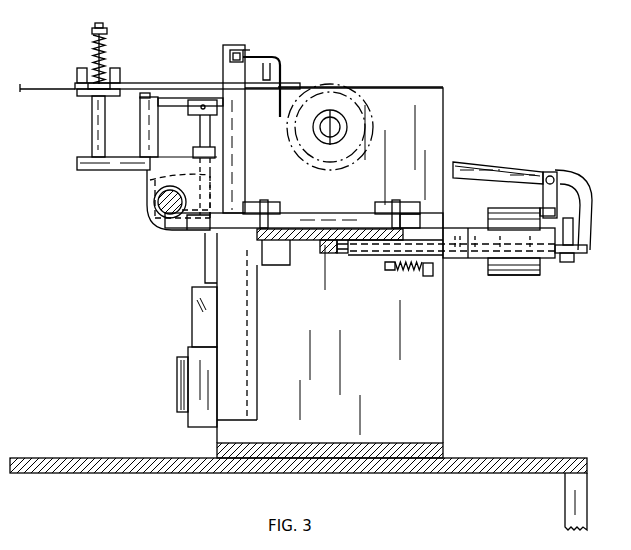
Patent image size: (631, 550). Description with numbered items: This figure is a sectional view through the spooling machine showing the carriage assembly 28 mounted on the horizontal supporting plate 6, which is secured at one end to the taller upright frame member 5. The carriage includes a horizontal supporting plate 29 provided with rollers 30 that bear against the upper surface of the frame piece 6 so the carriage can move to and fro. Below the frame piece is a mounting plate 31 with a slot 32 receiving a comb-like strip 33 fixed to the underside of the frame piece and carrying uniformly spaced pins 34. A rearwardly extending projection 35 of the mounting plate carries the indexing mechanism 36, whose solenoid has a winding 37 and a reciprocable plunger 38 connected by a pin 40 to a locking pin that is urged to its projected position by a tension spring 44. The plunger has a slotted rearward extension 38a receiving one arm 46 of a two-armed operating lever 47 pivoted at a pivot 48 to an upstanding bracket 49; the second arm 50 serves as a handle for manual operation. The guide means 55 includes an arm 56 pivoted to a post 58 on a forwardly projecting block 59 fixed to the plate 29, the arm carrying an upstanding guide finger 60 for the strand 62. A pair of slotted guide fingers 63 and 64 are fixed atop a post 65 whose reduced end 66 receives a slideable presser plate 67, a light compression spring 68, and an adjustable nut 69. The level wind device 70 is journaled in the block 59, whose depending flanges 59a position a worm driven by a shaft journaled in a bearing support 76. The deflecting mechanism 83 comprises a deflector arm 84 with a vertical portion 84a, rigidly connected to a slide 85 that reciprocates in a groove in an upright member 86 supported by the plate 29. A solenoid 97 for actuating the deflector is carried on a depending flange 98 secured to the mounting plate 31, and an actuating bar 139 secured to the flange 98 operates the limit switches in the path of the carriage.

The upright frame member 5 is at (443, 117).
The horizontal supporting plate 6 is at (297, 243).
The carriage assembly 28 is at (180, 255).
The horizontal supporting plate 29 is at (318, 213).
The rollers 30 is at (262, 202).
The mounting plate 31 is at (342, 254).
The slot 32 is at (358, 256).
The rod or strip 33 is at (328, 254).
The pins 34 is at (348, 242).
The rearwardly extending projection 35 is at (480, 230).
The indexing mechanism 36 is at (500, 278).
The winding 37 is at (517, 277).
The plunger 38 is at (488, 262).
The rearward extension 38a is at (578, 262).
The pin 40 is at (426, 277).
The tension spring 44 is at (400, 272).
The arm 46 is at (585, 190).
The two-armed operating lever 47 is at (524, 163).
The pivot 48 is at (551, 176).
The upstanding bracket 49 is at (537, 193).
The second arm 50 is at (482, 168).
The guide means 55 is at (185, 83).
The arm 56 is at (160, 108).
The post 58 is at (142, 128).
The forwardly projecting block 59 is at (138, 172).
The depending flanges 59a is at (148, 216).
The upstanding guide part or finger 60 is at (280, 81).
The strand 62 is at (38, 89).
The slotted guide finger 63 is at (77, 78).
The slotted guide finger 64 is at (120, 78).
The post 65 is at (92, 128).
The reduced end 66 is at (108, 52).
The presser plate 67 is at (105, 92).
The compression spring 68 is at (92, 50).
The adjustable nut 69 is at (106, 28).
The level wind device 70 is at (197, 128).
The bearing support 76 is at (148, 238).
The deflecting mechanism 83 is at (256, 46).
The deflector arm 84 is at (280, 58).
The vertical portion 84a is at (282, 66).
The slide 85 is at (233, 50).
The upright member 86 is at (245, 135).
The solenoid 97 is at (177, 393).
The depending flange 98 is at (257, 378).
The actuating bar 139 is at (258, 408).